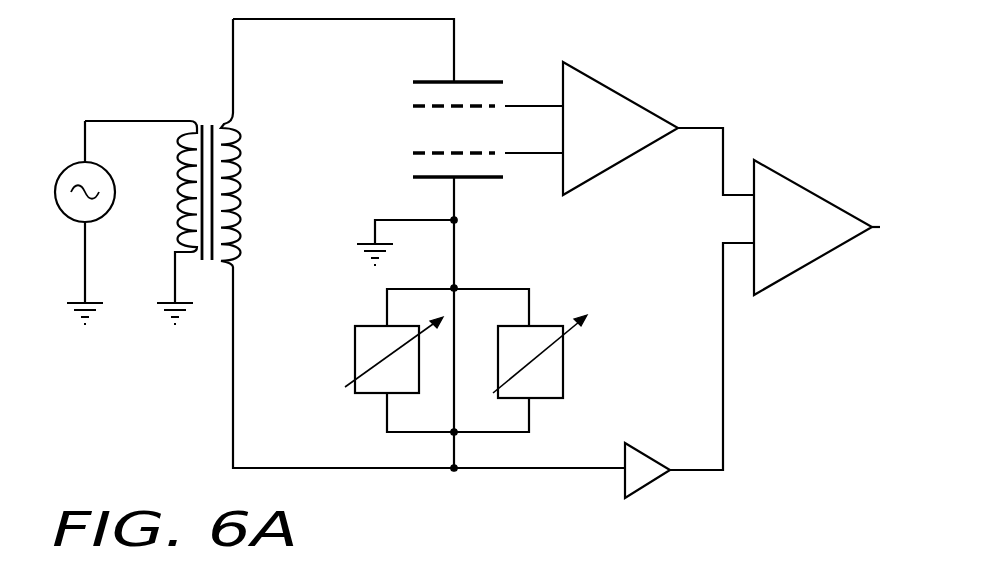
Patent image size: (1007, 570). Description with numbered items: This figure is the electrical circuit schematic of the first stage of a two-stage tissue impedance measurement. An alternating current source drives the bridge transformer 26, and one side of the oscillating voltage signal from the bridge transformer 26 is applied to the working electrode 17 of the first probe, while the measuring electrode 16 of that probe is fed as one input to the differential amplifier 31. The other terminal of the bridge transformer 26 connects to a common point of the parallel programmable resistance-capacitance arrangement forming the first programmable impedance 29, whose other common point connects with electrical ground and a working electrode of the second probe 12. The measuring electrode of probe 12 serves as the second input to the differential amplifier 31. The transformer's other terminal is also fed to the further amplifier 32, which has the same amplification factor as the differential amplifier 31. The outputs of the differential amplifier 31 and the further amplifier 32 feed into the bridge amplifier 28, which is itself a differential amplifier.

The probe 12 is at (407, 145).
The measuring electrode 16 is at (472, 80).
The working electrode 17 is at (424, 104).
The bridge transformer 26 is at (208, 119).
The bridge amplifier 28 is at (807, 187).
The first programmable impedance 29 is at (376, 320).
The differential amplifier 31 is at (620, 90).
The further amplifier 32 is at (652, 482).